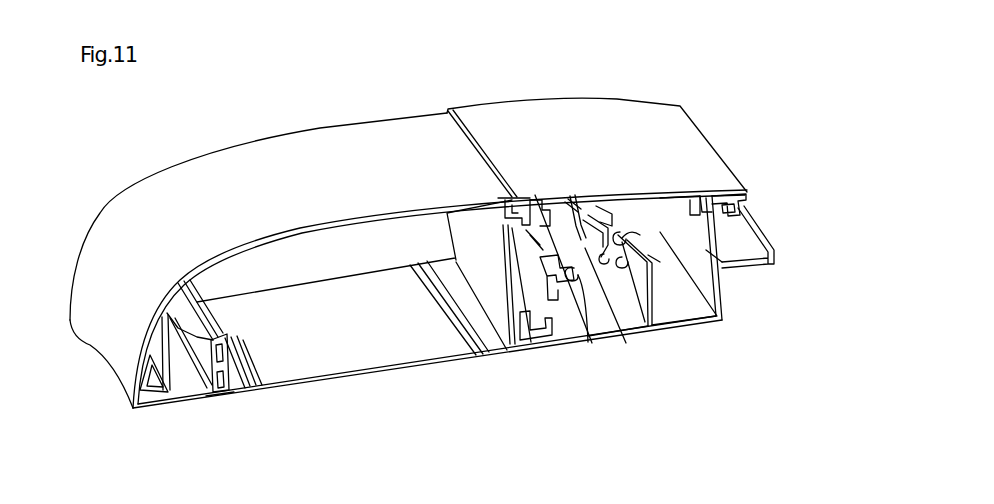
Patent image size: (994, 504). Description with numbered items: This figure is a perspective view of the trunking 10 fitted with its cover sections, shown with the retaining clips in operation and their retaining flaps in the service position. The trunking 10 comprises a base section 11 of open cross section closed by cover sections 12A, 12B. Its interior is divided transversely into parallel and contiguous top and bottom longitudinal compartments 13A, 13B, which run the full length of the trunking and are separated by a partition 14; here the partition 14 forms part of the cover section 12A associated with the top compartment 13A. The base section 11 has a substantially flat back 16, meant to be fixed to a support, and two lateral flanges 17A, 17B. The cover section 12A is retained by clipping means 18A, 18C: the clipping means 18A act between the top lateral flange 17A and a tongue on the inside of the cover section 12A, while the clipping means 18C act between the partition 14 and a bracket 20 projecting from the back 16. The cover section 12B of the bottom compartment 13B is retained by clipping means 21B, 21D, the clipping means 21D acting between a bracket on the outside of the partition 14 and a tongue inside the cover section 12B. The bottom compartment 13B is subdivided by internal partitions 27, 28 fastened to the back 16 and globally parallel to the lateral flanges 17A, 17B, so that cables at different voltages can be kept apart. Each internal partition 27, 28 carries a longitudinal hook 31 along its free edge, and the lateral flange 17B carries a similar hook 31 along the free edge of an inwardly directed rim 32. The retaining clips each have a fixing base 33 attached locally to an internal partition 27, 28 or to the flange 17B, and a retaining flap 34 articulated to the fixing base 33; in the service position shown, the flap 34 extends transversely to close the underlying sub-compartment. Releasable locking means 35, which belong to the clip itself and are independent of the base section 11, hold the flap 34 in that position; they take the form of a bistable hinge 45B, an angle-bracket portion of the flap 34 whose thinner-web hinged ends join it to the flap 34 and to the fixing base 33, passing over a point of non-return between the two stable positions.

The trunking 10 is at (417, 393).
The base section 11 is at (339, 391).
The cover section 12A is at (296, 133).
The cover section 12B is at (630, 101).
The top longitudinal compartment 13A is at (283, 272).
The bottom longitudinal compartment 13B is at (740, 270).
The partition 14 is at (505, 268).
The back 16 is at (293, 396).
The top lateral flange 17A is at (143, 396).
The bottom lateral flange 17B is at (739, 297).
The clipping means 18A is at (157, 407).
The clipping means 18C is at (535, 349).
The bracket 20 is at (553, 297).
The clipping means 21B is at (750, 207).
The clipping means 21D is at (513, 190).
The internal partition 27 is at (656, 303).
The internal partition 28 is at (588, 308).
The longitudinal hook 31 is at (536, 206).
The inwardly directed rim 32 is at (677, 193).
The fixing base 33 is at (553, 268).
The retaining flap 34 is at (622, 393).
The releasable locking means 35 is at (582, 194).
The bistable hinge 45B is at (606, 200).